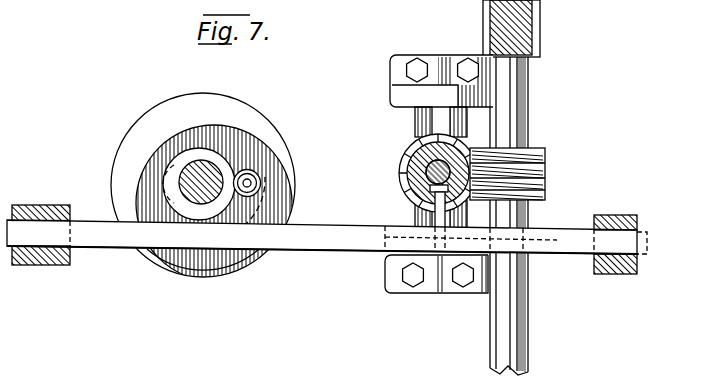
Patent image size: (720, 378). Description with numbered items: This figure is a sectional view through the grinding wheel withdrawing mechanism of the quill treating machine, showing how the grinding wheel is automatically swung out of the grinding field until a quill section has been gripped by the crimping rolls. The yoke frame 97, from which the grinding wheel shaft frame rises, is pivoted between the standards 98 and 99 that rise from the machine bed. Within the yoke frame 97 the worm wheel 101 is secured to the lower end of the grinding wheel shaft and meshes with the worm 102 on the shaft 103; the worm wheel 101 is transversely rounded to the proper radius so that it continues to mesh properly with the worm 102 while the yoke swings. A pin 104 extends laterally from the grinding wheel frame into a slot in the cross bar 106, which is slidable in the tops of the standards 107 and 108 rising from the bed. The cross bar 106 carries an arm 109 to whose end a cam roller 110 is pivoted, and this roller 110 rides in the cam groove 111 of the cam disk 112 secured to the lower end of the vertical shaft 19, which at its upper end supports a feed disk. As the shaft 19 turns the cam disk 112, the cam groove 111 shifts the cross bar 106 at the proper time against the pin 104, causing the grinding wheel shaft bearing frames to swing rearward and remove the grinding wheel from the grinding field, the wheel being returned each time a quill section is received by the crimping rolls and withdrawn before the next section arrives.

The vertical shaft 19 is at (182, 175).
The yoke frame 97 is at (458, 97).
The standard 98 is at (398, 56).
The standard 99 is at (393, 288).
The worm wheel 101 is at (408, 164).
The worm 102 is at (530, 151).
The shaft 103 is at (527, 116).
The pin 104 is at (436, 217).
The cross bar 106 is at (561, 234).
The standard 107 is at (55, 205).
The standard 108 is at (633, 222).
The arm 109 is at (257, 202).
The cam roller 110 is at (250, 172).
The cam groove 111 is at (227, 137).
The cam disk 112 is at (180, 103).